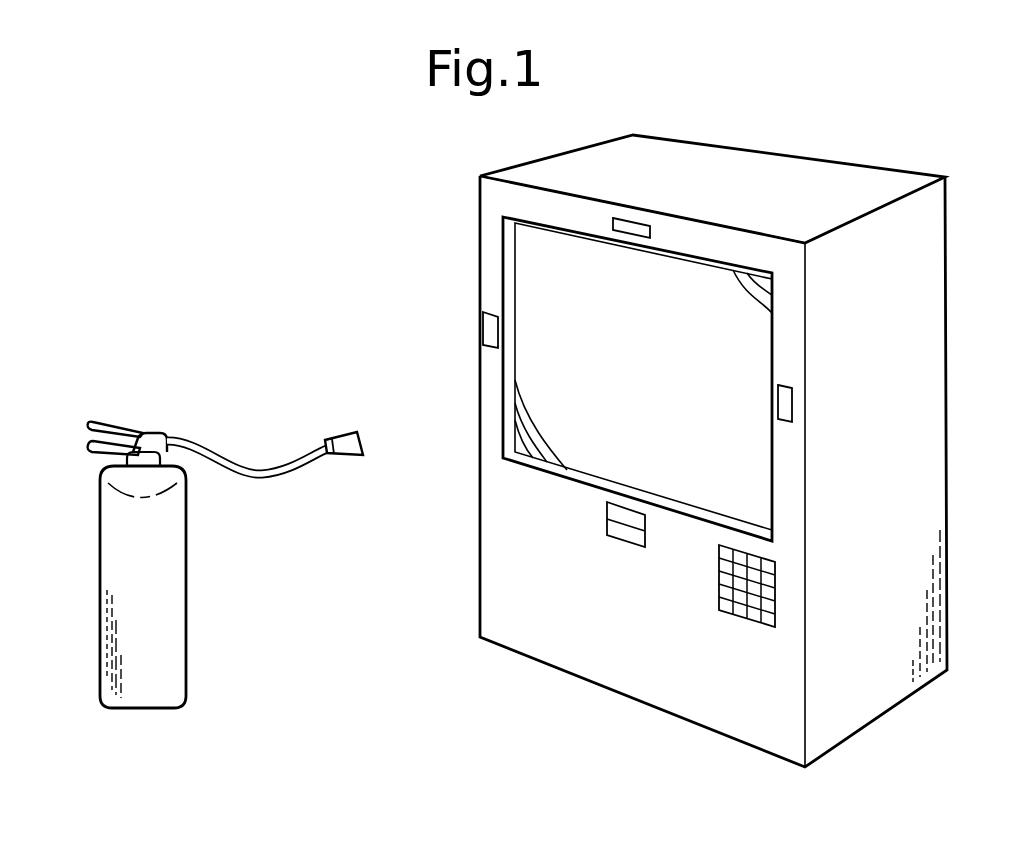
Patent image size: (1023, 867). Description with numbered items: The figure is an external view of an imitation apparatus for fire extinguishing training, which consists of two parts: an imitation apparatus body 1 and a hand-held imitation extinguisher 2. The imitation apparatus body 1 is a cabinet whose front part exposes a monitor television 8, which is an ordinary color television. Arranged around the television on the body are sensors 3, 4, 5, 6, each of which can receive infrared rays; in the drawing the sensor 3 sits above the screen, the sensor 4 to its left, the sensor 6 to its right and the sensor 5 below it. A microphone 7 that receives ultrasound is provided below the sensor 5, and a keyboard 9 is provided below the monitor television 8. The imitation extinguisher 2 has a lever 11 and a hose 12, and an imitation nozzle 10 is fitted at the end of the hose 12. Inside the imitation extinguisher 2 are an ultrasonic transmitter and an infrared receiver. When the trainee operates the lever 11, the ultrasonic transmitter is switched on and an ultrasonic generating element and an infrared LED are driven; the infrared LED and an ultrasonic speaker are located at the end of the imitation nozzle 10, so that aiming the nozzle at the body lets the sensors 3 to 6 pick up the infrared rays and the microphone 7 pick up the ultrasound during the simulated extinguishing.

The imitation apparatus body 1 is at (480, 176).
The imitation extinguisher 2 is at (187, 640).
The sensor 3 is at (620, 218).
The sensor 4 is at (483, 344).
The sensor 5 is at (645, 515).
The sensor 6 is at (792, 420).
The microphone 7 is at (608, 535).
The monitor television 8 is at (547, 272).
The keyboard 9 is at (718, 610).
The imitation nozzle 10 is at (345, 433).
The lever 11 is at (108, 420).
The hose 12 is at (258, 465).